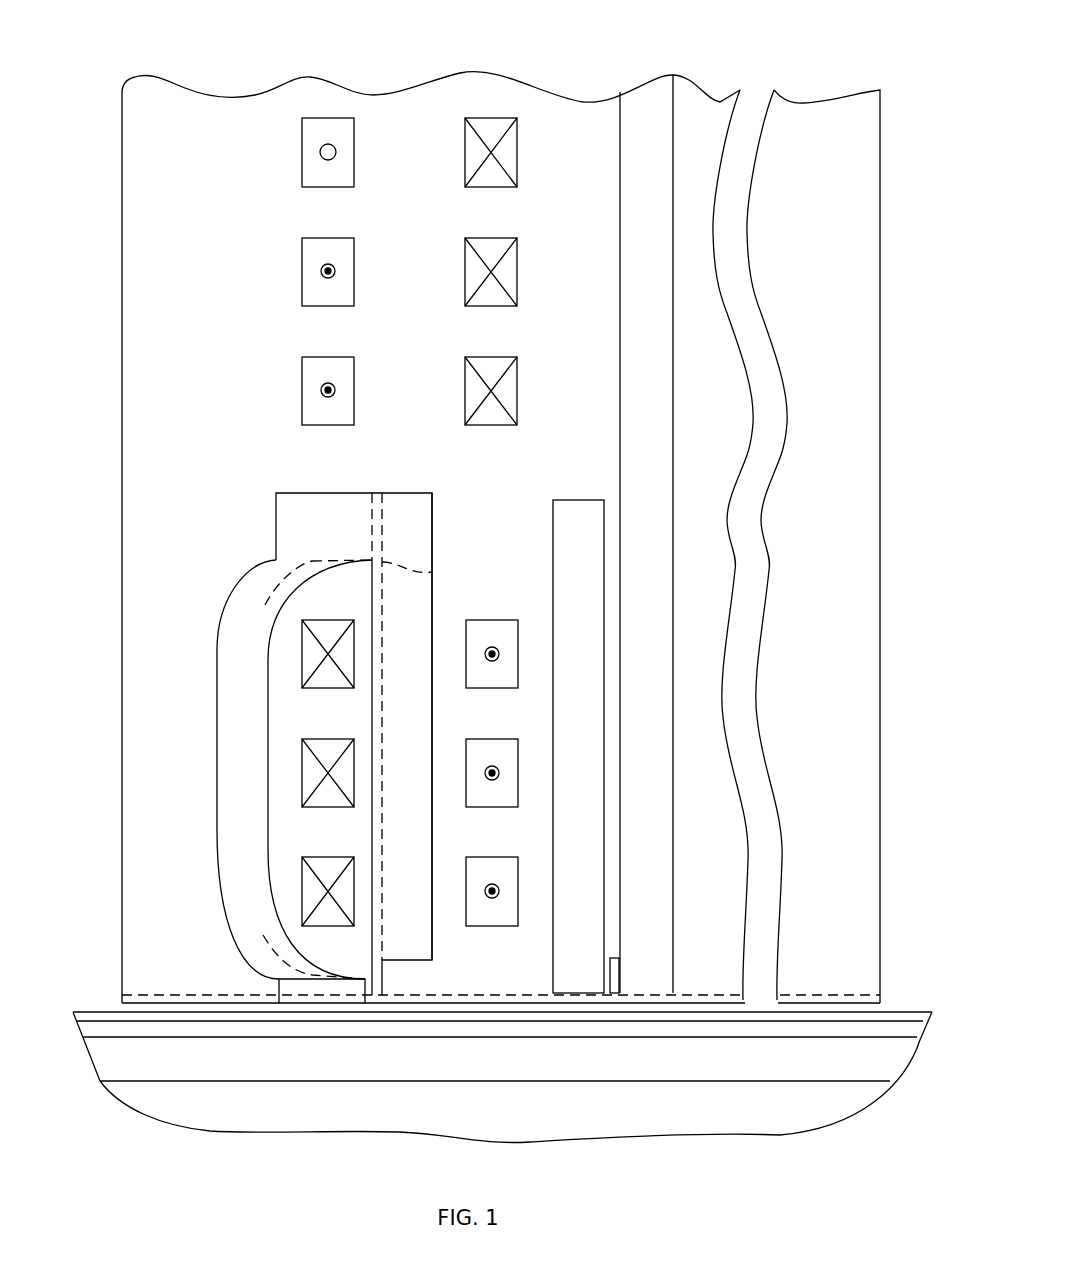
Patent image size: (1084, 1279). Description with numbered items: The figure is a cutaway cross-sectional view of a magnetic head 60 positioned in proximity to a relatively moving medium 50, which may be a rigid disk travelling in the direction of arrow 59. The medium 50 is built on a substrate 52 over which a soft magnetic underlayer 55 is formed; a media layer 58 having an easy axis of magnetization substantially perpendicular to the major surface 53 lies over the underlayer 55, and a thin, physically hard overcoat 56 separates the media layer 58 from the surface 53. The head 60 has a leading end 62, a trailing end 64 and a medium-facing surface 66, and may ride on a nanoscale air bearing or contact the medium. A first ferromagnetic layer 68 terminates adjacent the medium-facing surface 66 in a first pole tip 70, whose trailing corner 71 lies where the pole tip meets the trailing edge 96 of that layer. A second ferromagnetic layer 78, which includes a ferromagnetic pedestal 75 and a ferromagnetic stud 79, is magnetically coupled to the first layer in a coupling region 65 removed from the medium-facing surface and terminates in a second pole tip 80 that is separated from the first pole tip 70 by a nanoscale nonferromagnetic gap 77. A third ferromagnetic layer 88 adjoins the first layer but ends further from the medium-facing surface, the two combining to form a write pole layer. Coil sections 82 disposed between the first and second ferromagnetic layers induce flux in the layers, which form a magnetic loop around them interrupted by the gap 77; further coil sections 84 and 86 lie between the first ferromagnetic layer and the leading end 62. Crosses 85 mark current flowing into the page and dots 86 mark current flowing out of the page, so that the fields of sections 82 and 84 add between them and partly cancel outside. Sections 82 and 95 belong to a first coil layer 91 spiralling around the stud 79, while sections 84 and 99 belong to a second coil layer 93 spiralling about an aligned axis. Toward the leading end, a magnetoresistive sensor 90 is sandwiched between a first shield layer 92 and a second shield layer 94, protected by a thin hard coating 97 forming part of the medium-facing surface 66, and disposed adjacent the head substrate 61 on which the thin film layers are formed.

The medium 50 is at (851, 1150).
The substrate 52 is at (587, 1123).
The major surface 53 is at (915, 993).
The soft magnetic underlayer 55 is at (500, 1078).
The overcoat 56 is at (768, 1015).
The media layer 58 is at (226, 1032).
The arrow 59 is at (383, 1114).
The magnetic head 60 is at (131, 58).
The substrate 61 is at (691, 629).
The leading end 62 is at (892, 820).
The trailing end 64 is at (114, 832).
The coupling region 65 is at (432, 483).
The medium-facing surface 66 is at (158, 1015).
The first ferromagnetic layer 68 is at (432, 572).
The first pole tip 70 is at (381, 1015).
The trailing corner 71 is at (380, 995).
The ferromagnetic pedestal 75 is at (301, 948).
The nonferromagnetic gap 77 is at (368, 1015).
The second ferromagnetic layer 78 is at (217, 757).
The ferromagnetic stud 79 is at (274, 592).
The second pole tip 80 is at (318, 1015).
The coil sections 82 is at (302, 807).
The coil sections 84 is at (518, 805).
The crosses 85 is at (492, 155).
The dots 86 is at (320, 152).
The third ferromagnetic layer 88 is at (432, 600).
The magnetoresistive sensor 90 is at (619, 968).
The first coil layer 91 is at (327, 95).
The first soft magnetic shield layer 92 is at (631, 785).
The second coil layer 93 is at (490, 95).
The second soft magnetic shield layer 94 is at (562, 785).
The coil sections 95 is at (302, 358).
The trailing edge 96 is at (360, 713).
The hard coating 97 is at (534, 992).
The coil sections 99 is at (517, 303).